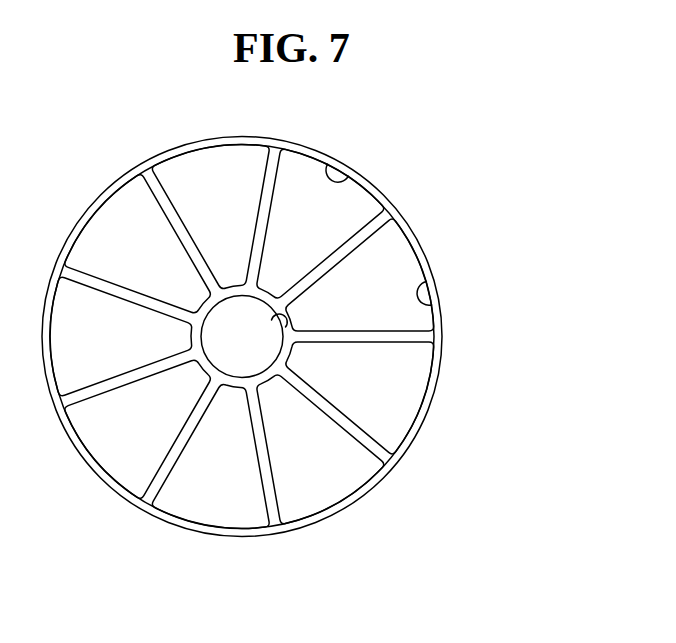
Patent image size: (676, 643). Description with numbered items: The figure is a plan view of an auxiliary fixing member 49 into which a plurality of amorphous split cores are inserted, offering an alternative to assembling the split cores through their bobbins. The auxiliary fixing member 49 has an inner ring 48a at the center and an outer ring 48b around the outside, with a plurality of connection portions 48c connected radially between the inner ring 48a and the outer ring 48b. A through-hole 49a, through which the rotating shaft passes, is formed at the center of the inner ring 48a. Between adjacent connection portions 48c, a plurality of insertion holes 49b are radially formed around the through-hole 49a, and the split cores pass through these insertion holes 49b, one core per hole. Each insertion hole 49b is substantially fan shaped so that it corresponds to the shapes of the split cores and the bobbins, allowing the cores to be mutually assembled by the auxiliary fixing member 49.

The auxiliary fixing member 49 is at (291, 349).
The through-hole 49a is at (302, 330).
The insertion holes 49b is at (345, 187).
The inner ring 48a is at (230, 382).
The outer ring 48b is at (310, 523).
The connection portions 48c is at (335, 423).